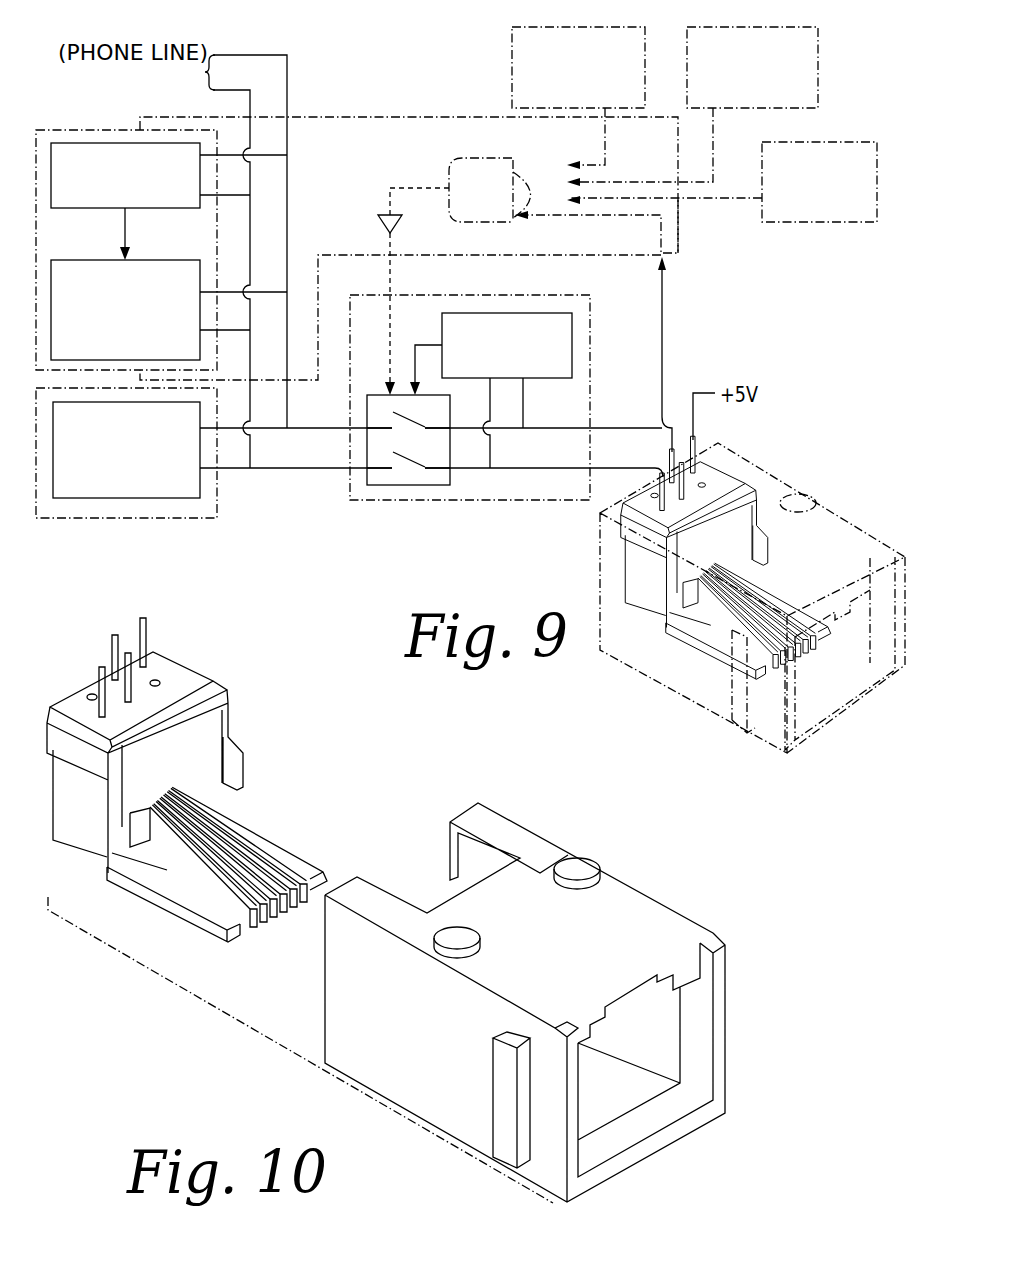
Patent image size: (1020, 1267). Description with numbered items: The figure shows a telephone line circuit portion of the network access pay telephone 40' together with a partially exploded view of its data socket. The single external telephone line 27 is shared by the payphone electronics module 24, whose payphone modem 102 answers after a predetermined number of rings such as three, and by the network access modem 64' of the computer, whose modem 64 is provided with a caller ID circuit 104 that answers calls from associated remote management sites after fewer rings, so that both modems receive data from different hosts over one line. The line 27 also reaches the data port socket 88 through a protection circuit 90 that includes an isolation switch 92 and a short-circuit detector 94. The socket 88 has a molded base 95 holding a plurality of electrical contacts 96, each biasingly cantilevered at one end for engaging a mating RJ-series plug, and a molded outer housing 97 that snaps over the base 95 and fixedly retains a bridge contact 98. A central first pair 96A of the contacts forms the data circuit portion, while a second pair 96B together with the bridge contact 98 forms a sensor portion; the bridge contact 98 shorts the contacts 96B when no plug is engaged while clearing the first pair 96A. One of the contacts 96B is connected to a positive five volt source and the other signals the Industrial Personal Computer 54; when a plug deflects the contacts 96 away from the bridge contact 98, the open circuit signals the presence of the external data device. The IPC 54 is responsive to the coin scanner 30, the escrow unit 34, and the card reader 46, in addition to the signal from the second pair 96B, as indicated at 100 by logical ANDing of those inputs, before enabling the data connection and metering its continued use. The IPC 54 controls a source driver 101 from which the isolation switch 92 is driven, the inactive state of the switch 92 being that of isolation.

In FIG. 9, the telephone line 27 is at (205, 72).
In FIG. 9, the network access modem with caller ID 64' is at (161, 228).
In FIG. 9, the caller ID circuit 104 is at (104, 210).
In FIG. 9, the modem 64 is at (169, 294).
In FIG. 9, the payphone electronics module 24 is at (158, 475).
In FIG. 9, the payphone modem 102 is at (204, 492).
In FIG. 9, the coin scanner 30 is at (510, 103).
In FIG. 9, the escrow unit 34 is at (820, 80).
In FIG. 9, the card reader 46 is at (838, 224).
In FIG. 9, the logical ANDing 100 is at (447, 178).
In FIG. 9, the source driver 101 is at (378, 220).
In FIG. 9, the Industrial Personal Computer (IPC) 54 is at (681, 210).
In FIG. 9, the protection circuit 90 is at (470, 420).
In FIG. 9, the short-circuit detector 94 is at (574, 380).
In FIG. 9, the isolation switch 92 is at (451, 480).
In FIG. 9, the data port socket 88 is at (661, 686).
In FIG. 10, the data port socket 88 is at (228, 1033).
In FIG. 9, the pay telephone 40' is at (377, 572).
In FIG. 10, the bridge contact 98 is at (213, 763).
In FIG. 10, the second pair of contacts 96B is at (142, 618).
In FIG. 10, the first pair of contacts 96A is at (128, 652).
In FIG. 10, the electrical contacts 96 is at (270, 868).
In FIG. 10, the molded base 95 is at (325, 868).
In FIG. 10, the outer housing 97 is at (476, 805).